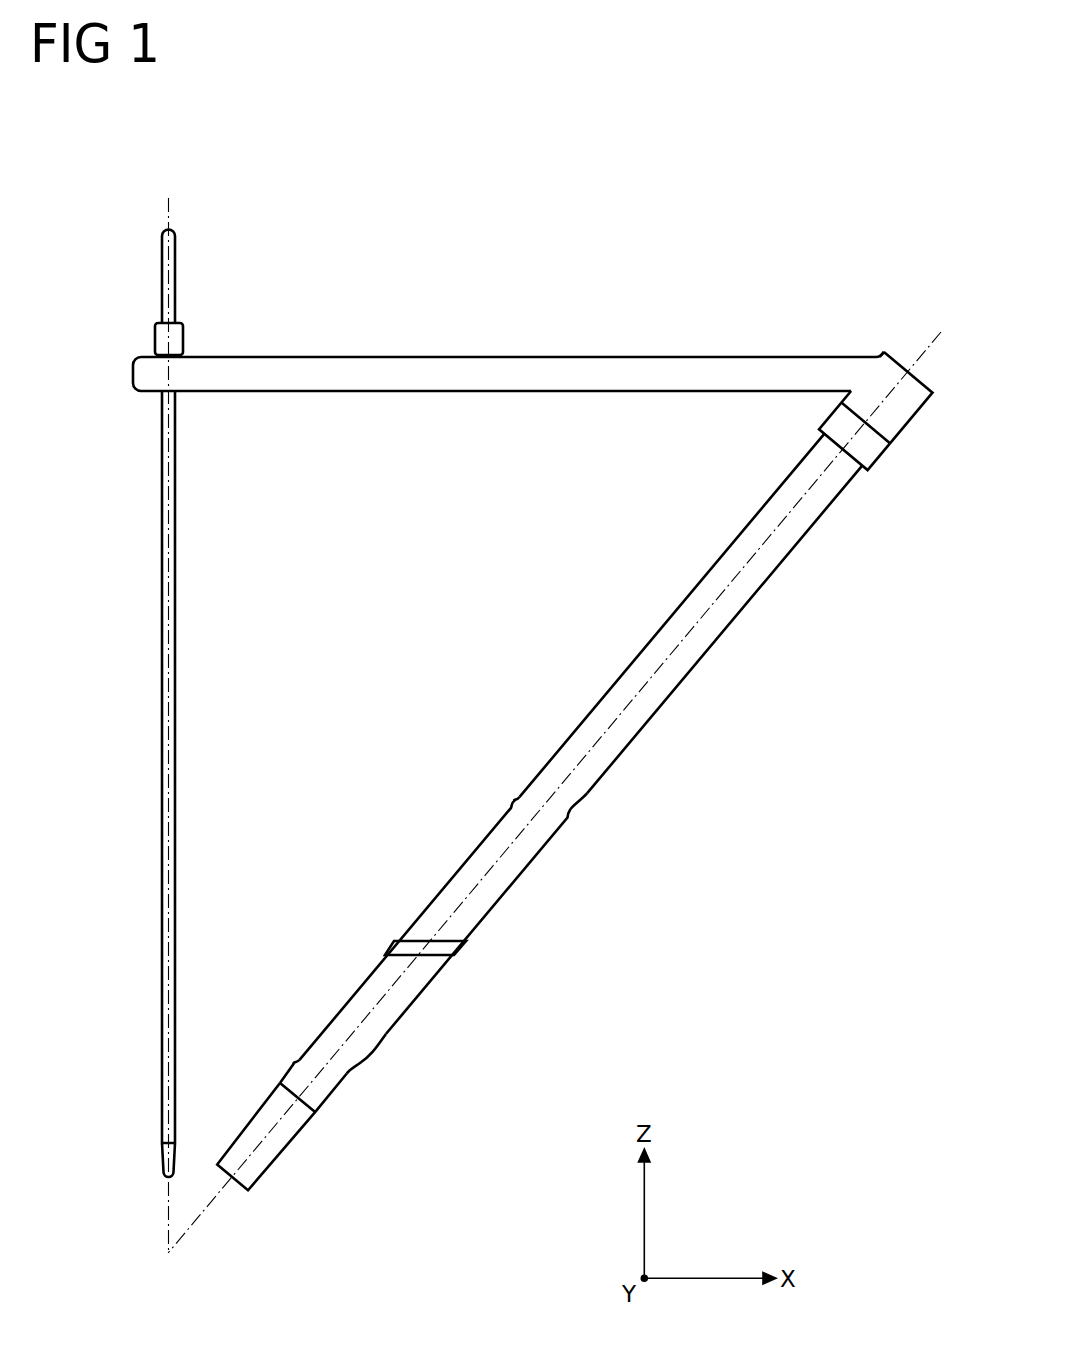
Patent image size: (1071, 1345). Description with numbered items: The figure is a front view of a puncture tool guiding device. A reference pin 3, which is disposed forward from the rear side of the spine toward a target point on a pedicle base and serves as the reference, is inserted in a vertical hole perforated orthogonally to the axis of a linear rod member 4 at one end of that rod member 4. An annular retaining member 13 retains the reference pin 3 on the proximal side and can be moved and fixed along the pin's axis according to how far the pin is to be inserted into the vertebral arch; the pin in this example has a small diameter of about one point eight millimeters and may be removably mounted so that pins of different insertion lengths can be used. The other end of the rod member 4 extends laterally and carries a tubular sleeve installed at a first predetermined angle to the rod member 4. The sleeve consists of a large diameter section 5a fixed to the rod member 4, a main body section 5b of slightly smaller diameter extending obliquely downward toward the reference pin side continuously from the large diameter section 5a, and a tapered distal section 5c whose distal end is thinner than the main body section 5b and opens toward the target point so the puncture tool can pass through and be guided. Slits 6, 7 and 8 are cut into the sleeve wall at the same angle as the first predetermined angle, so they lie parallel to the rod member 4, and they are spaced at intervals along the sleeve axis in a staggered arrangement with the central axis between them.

The reference pin 3 is at (162, 665).
The retaining member 13 is at (180, 316).
The linear rod member 4 is at (470, 357).
The large diameter section 5a is at (895, 417).
The main body section 5b is at (739, 612).
The distal section 5c is at (272, 1163).
The slit 6 is at (350, 1070).
The slit 7 is at (440, 946).
The slit 8 is at (572, 808).